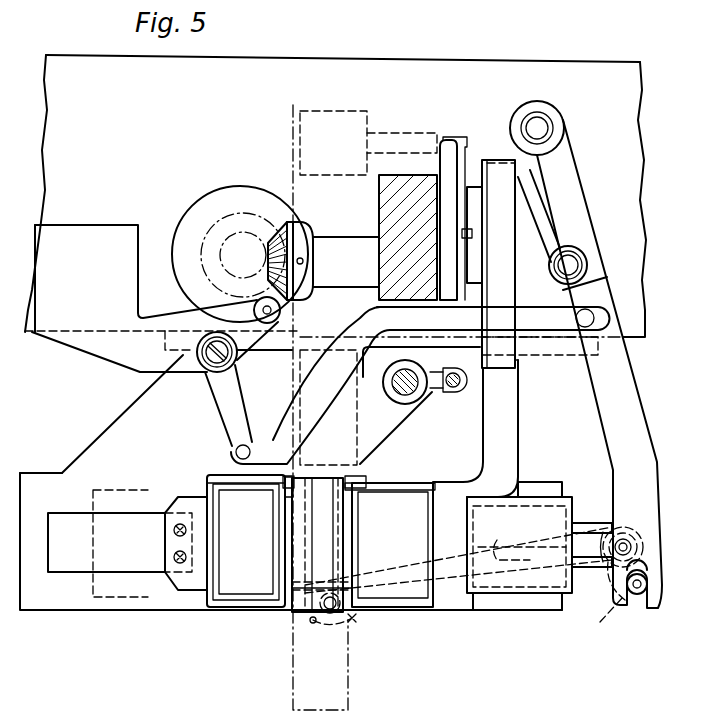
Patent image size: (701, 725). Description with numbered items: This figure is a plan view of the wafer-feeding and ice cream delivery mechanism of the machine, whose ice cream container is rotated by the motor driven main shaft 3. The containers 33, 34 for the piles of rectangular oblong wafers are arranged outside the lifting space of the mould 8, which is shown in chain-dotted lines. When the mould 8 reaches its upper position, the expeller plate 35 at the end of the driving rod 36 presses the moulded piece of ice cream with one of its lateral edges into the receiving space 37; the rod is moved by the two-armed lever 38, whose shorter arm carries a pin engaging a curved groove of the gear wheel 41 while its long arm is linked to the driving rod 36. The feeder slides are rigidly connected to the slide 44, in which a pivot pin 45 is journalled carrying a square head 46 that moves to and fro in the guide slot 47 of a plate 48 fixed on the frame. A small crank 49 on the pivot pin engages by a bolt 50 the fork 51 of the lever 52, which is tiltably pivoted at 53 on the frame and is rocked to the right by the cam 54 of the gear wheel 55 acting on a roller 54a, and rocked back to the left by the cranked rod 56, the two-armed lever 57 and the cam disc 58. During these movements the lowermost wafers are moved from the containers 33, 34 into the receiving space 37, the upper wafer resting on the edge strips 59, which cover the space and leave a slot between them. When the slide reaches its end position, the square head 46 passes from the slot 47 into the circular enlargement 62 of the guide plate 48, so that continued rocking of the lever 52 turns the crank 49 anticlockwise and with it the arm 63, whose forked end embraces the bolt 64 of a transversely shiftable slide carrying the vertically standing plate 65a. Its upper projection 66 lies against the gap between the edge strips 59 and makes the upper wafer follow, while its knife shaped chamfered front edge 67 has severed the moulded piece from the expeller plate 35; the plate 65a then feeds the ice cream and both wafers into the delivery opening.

The main shaft 3 is at (335, 246).
The mould 8 is at (300, 400).
The container 33 is at (408, 481).
The container 34 is at (220, 475).
The expeller plate 35 is at (314, 339).
The driving rod 36 is at (297, 188).
The receiving space 37 is at (317, 545).
The two-armed lever 38 is at (452, 163).
The gear wheel 41 is at (473, 197).
The slide 44 is at (583, 502).
The pivot pin 45 is at (628, 548).
The square head 46 is at (626, 544).
The guide slot 47 is at (512, 548).
The plate 48 is at (548, 548).
The crank 49 is at (600, 603).
The bolt 50 is at (637, 590).
The fork 51 is at (623, 610).
The lever 52 is at (606, 404).
The pivot 53 is at (543, 128).
The cam 54 is at (531, 222).
The roller 54a is at (580, 262).
The gear wheel 55 is at (508, 194).
The cranked rod 56 is at (327, 402).
The two-armed lever 57 is at (235, 397).
The cam disc 58 is at (207, 205).
The edge strips 59 is at (343, 512).
The circular enlargement 62 is at (618, 530).
The arm 63 is at (352, 619).
The bolt 64 is at (313, 622).
The plate 65a is at (295, 582).
The upper projection 66 is at (322, 586).
The knife shaped chamfered front edge 67 is at (340, 584).